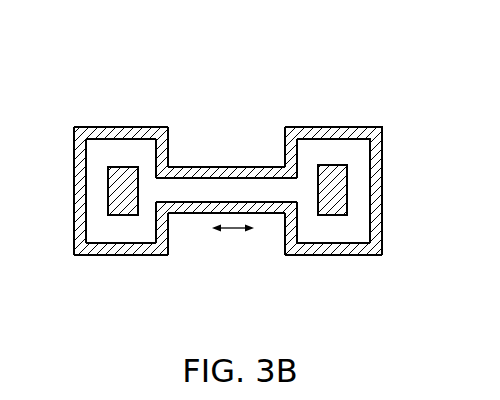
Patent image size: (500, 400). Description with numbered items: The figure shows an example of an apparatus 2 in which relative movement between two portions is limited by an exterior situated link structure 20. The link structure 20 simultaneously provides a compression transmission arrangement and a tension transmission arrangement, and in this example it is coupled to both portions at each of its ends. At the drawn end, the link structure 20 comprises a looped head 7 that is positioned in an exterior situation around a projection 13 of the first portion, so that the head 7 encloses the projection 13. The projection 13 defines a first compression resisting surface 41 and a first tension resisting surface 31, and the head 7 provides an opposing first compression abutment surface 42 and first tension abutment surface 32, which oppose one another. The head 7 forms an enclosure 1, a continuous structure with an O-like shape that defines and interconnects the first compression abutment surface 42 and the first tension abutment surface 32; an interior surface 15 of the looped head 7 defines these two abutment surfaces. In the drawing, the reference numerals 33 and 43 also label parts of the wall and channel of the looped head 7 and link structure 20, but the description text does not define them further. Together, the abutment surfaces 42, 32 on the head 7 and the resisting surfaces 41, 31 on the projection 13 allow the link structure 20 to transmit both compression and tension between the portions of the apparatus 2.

The enclosure 1 is at (73, 131).
The apparatus 2 is at (385, 55).
The head 7 is at (85, 256).
The projection 13 is at (121, 167).
The interior surface 15 is at (133, 233).
The link structure 20 is at (233, 167).
The first tension resisting surface 31 is at (107, 178).
The first tension abutment surface 32 is at (91, 216).
The side wall 33 is at (94, 189).
The first compression resisting surface 41 is at (169, 165).
The first compression abutment surface 42 is at (151, 233).
The channel surface 43 is at (166, 218).